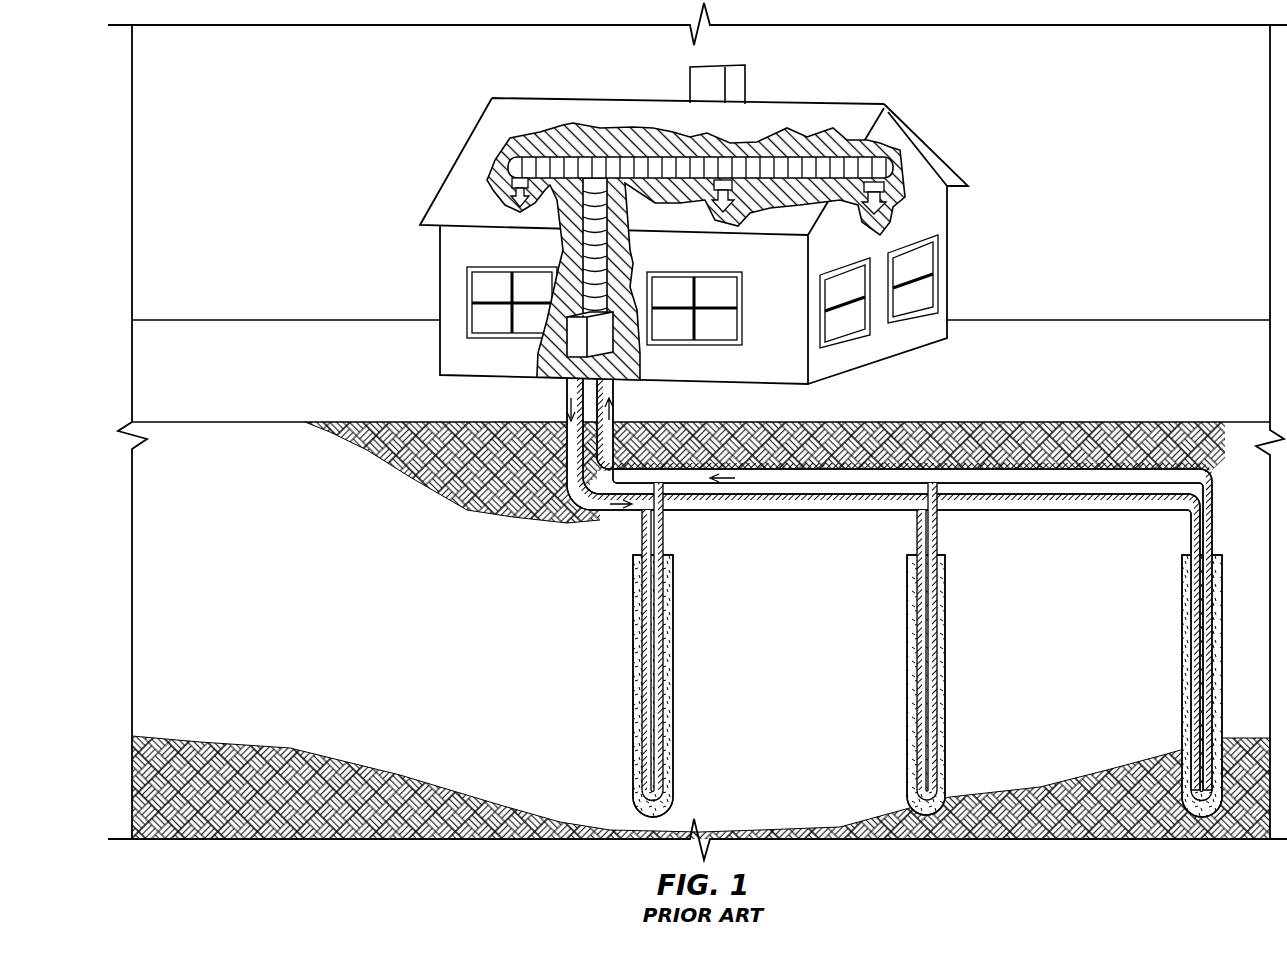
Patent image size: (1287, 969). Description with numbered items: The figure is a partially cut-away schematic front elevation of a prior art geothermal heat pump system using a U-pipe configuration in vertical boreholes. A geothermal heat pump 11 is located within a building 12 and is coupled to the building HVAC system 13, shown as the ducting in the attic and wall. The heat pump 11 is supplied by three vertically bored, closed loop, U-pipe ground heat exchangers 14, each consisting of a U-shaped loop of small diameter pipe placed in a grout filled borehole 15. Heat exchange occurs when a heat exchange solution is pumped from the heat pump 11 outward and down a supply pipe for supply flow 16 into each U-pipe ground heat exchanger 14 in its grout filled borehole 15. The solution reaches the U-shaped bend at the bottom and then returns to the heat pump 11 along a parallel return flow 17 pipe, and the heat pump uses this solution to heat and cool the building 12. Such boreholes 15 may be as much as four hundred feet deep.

The geothermal heat pump 11 is at (572, 342).
The building 12 is at (401, 272).
The building HVAC system 13 is at (593, 165).
The U-pipe ground heat exchanger 14 is at (647, 655).
The grout filled borehole 15 is at (633, 728).
The supply flow 16 is at (568, 395).
The return flow 17 is at (610, 393).